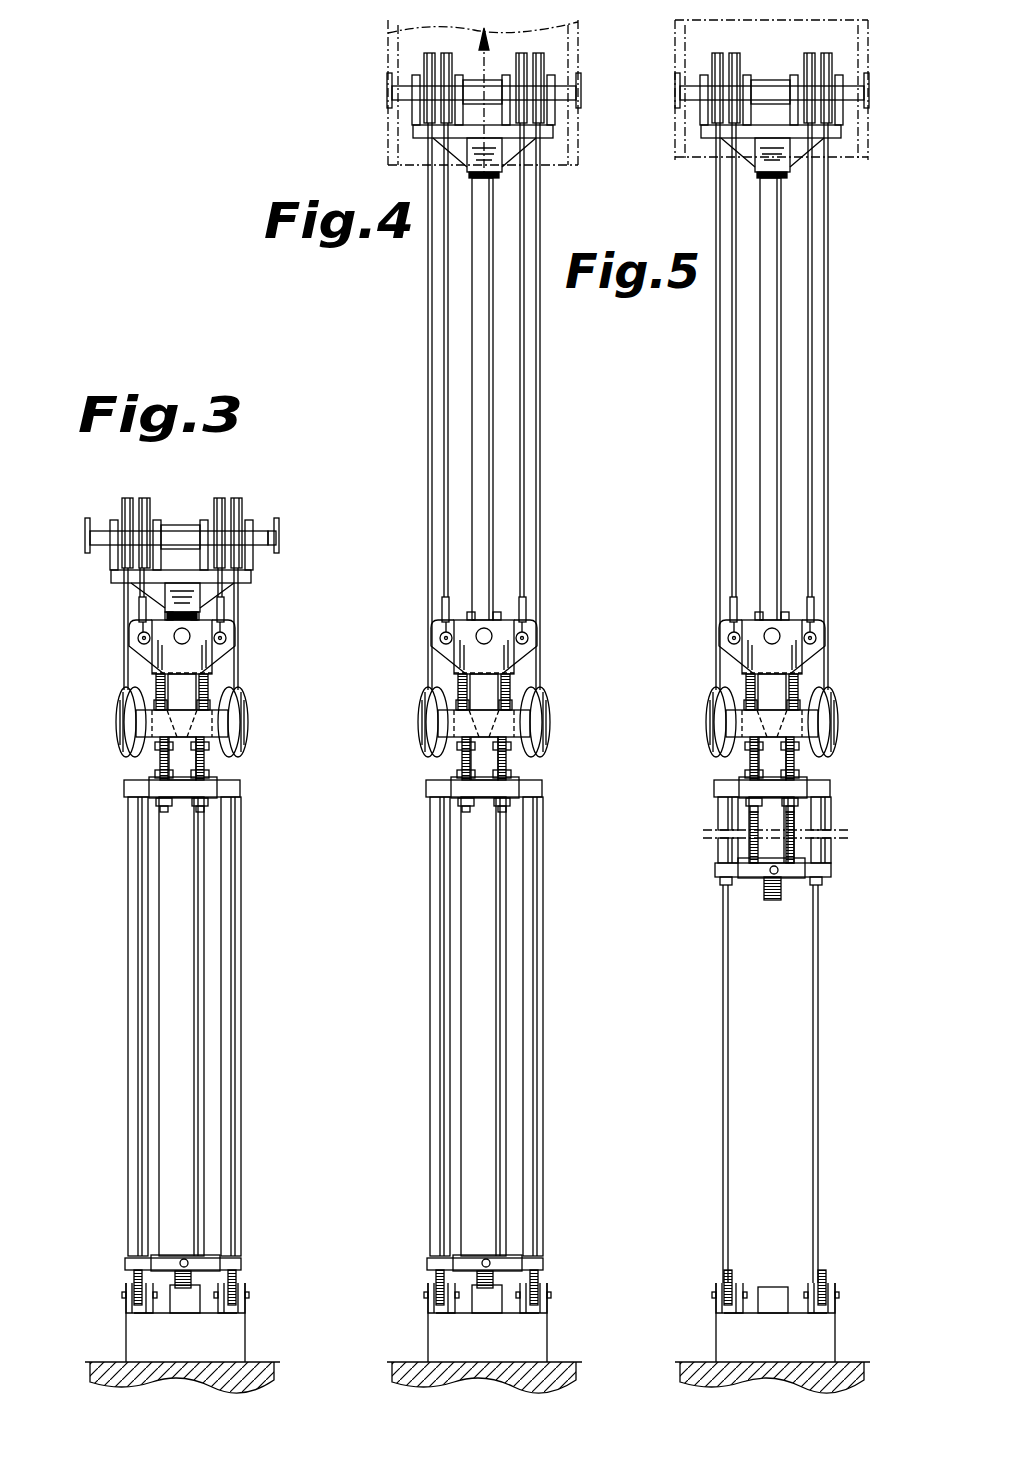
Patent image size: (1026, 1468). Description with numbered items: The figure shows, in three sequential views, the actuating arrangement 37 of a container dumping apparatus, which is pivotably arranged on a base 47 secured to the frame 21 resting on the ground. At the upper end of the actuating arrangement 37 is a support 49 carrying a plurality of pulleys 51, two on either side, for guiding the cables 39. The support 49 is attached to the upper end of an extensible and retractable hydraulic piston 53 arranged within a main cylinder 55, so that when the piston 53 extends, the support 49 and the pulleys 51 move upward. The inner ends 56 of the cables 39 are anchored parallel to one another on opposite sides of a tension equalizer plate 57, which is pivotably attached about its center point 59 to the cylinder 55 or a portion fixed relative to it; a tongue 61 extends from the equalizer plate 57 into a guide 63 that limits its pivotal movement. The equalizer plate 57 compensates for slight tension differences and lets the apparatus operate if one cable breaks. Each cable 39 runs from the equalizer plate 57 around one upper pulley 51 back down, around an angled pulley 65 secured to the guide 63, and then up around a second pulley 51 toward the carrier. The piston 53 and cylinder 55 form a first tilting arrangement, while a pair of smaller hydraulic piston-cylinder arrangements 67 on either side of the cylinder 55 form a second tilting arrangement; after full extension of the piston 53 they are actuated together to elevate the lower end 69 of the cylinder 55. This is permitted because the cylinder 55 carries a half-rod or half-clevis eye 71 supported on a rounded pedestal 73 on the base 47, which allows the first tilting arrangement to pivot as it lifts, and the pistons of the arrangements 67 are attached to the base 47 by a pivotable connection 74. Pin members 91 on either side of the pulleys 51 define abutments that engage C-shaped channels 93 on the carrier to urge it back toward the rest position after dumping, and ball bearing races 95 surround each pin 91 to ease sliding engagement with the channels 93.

In FIG. 3, the frame 21 is at (91, 1362).
In FIG. 4, the frame 21 is at (509, 1354).
In FIG. 5, the frame 21 is at (793, 1354).
In FIG. 3, the actuating arrangement 37 is at (282, 505).
In FIG. 5, the actuating arrangement 37 is at (870, 314).
In FIG. 3, the cables 39 is at (190, 628).
In FIG. 4, the cables 39 is at (480, 406).
In FIG. 5, the cables 39 is at (770, 406).
In FIG. 3, the base 47 is at (213, 1322).
In FIG. 4, the base 47 is at (460, 1322).
In FIG. 5, the base 47 is at (803, 1322).
In FIG. 3, the support 49 is at (223, 589).
In FIG. 4, the support 49 is at (446, 147).
In FIG. 5, the support 49 is at (808, 162).
In FIG. 3, the pulleys 51 is at (163, 506).
In FIG. 4, the pulleys 51 is at (480, 68).
In FIG. 5, the pulleys 51 is at (811, 67).
In FIG. 3, the hydraulic piston 53 is at (125, 611).
In FIG. 4, the hydraulic piston 53 is at (539, 399).
In FIG. 5, the hydraulic piston 53 is at (830, 399).
In FIG. 3, the cylinder 55 is at (126, 1026).
In FIG. 4, the cylinder 55 is at (538, 1026).
In FIG. 3, the inner ends of the cables 56 is at (178, 649).
In FIG. 4, the inner ends of the cables 56 is at (488, 640).
In FIG. 5, the inner ends of the cables 56 is at (779, 641).
In FIG. 3, the tension equalizer plate 57 is at (130, 658).
In FIG. 4, the tension equalizer plate 57 is at (532, 647).
In FIG. 5, the tension equalizer plate 57 is at (819, 654).
In FIG. 3, the center point 59 is at (119, 651).
In FIG. 4, the center point 59 is at (543, 600).
In FIG. 5, the center point 59 is at (827, 615).
In FIG. 3, the tongue 61 is at (127, 706).
In FIG. 4, the tongue 61 is at (533, 698).
In FIG. 3, the guide 63 is at (228, 714).
In FIG. 4, the guide 63 is at (443, 750).
In FIG. 5, the guide 63 is at (731, 744).
In FIG. 3, the angled pulley 65 is at (218, 732).
In FIG. 4, the angled pulley 65 is at (507, 732).
In FIG. 5, the angled pulley 65 is at (811, 724).
In FIG. 3, the hydraulic piston-cylinder arrangements 67 is at (180, 1026).
In FIG. 4, the hydraulic piston-cylinder arrangements 67 is at (492, 1026).
In FIG. 5, the hydraulic piston-cylinder arrangements 67 is at (768, 1040).
In FIG. 3, the lower end of the main hydraulic cylinder 69 is at (155, 1226).
In FIG. 4, the lower end of the main hydraulic cylinder 69 is at (525, 1221).
In FIG. 5, the lower end of the main hydraulic cylinder 69 is at (808, 857).
In FIG. 3, the half-rod or half-clevis eye 71 is at (238, 1248).
In FIG. 4, the half-rod or half-clevis eye 71 is at (547, 1256).
In FIG. 5, the half-rod or half-clevis eye 71 is at (827, 906).
In FIG. 3, the rounded pedestal 73 is at (124, 1317).
In FIG. 4, the rounded pedestal 73 is at (546, 1293).
In FIG. 5, the rounded pedestal 73 is at (817, 1258).
In FIG. 3, the pivotable connection 74 is at (178, 1276).
In FIG. 4, the pivotable connection 74 is at (457, 1281).
In FIG. 5, the pivotable connection 74 is at (768, 1277).
In FIG. 3, the pin members 91 is at (190, 550).
In FIG. 4, the pin members 91 is at (470, 90).
In FIG. 5, the pin members 91 is at (783, 95).
In FIG. 4, the C-shaped channels 93 is at (517, 92).
In FIG. 5, the C-shaped channels 93 is at (803, 90).
In FIG. 3, the ball bearing races 95 is at (282, 525).